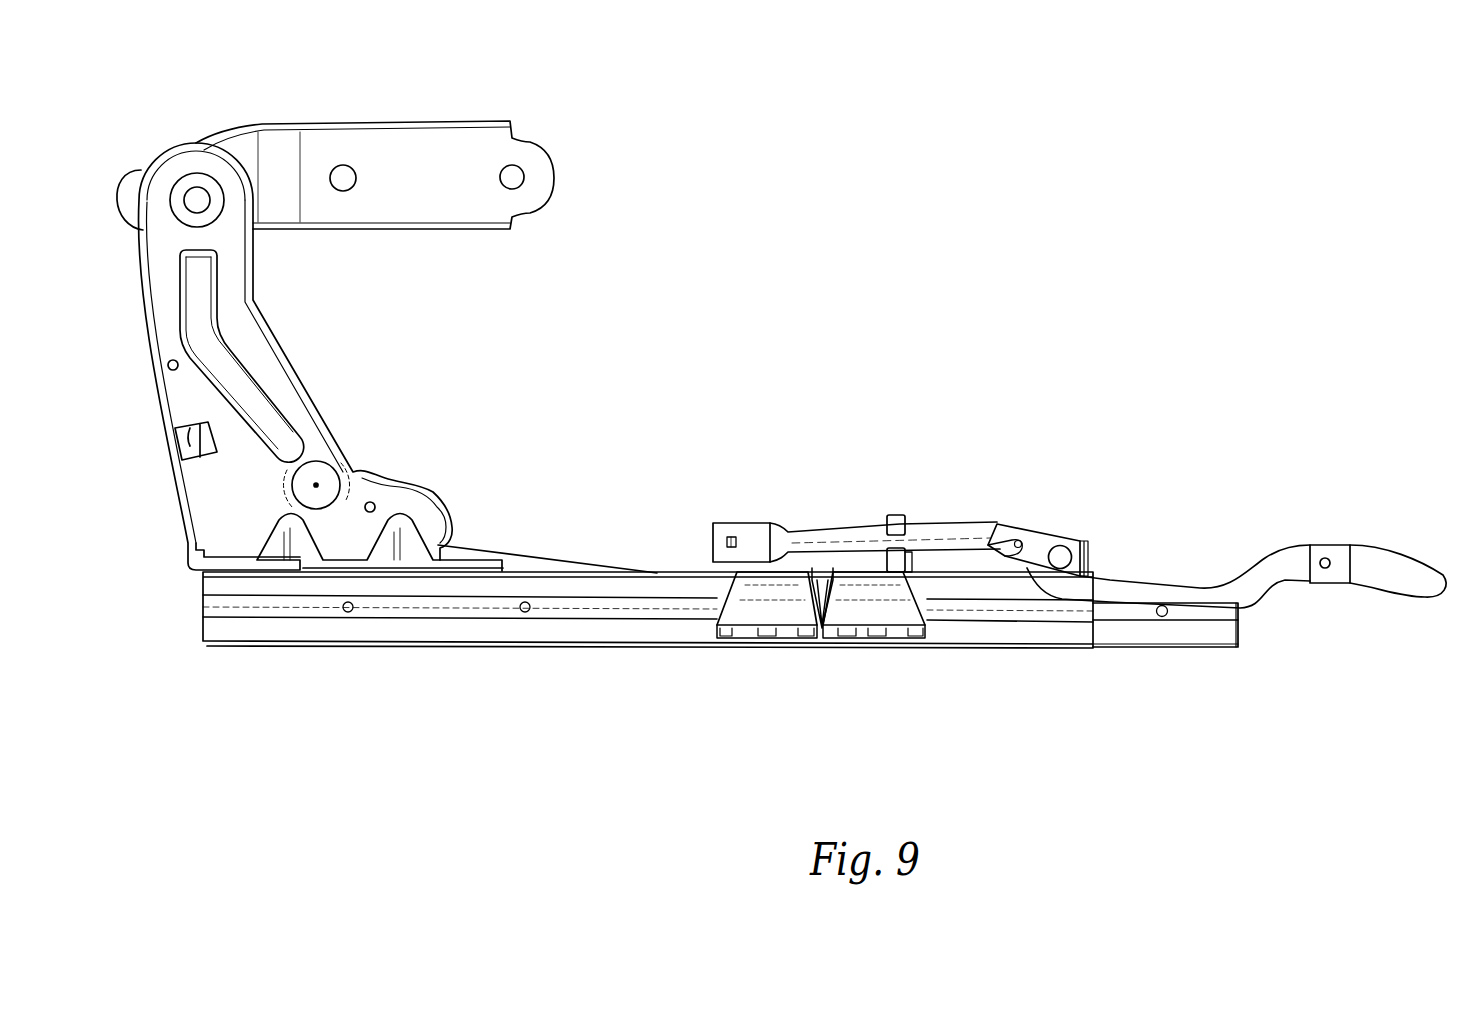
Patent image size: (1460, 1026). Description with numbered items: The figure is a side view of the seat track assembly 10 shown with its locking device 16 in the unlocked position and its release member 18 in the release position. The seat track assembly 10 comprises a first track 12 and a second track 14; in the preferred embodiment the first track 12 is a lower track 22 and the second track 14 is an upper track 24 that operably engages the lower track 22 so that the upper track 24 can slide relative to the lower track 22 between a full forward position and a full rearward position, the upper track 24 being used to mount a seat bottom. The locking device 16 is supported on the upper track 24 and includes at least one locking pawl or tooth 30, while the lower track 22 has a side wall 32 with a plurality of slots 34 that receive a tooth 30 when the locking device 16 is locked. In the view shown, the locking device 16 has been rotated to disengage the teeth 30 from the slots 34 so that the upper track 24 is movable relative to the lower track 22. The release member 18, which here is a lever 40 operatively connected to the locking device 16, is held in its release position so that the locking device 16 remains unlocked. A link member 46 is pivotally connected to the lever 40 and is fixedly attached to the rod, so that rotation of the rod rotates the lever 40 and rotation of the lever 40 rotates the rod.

The seat track assembly 10 is at (904, 291).
The first track 12 is at (1246, 656).
The second track 14 is at (345, 649).
The locking device 16 is at (857, 598).
The release member 18 is at (944, 513).
The lower track 22 is at (1182, 647).
The upper track 24 is at (428, 646).
The locking pawl or tooth 30 is at (920, 633).
The side wall 32 is at (1135, 645).
The slots 34 is at (750, 633).
The lever 40 is at (971, 535).
The link member 46 is at (1088, 552).